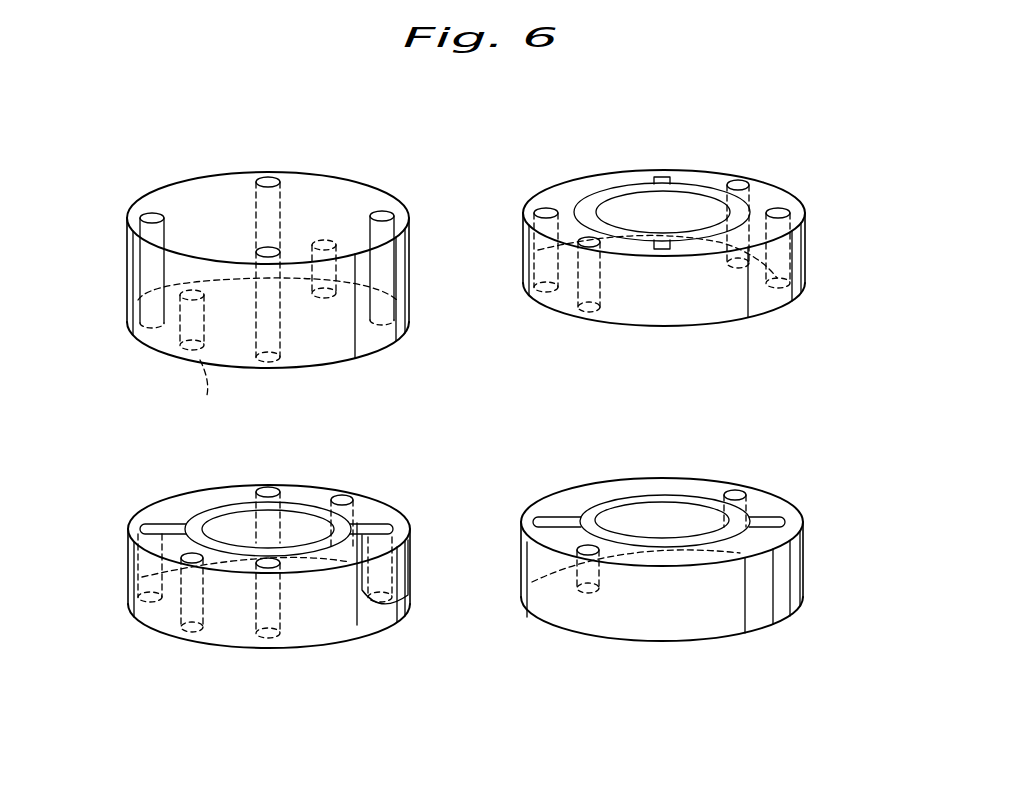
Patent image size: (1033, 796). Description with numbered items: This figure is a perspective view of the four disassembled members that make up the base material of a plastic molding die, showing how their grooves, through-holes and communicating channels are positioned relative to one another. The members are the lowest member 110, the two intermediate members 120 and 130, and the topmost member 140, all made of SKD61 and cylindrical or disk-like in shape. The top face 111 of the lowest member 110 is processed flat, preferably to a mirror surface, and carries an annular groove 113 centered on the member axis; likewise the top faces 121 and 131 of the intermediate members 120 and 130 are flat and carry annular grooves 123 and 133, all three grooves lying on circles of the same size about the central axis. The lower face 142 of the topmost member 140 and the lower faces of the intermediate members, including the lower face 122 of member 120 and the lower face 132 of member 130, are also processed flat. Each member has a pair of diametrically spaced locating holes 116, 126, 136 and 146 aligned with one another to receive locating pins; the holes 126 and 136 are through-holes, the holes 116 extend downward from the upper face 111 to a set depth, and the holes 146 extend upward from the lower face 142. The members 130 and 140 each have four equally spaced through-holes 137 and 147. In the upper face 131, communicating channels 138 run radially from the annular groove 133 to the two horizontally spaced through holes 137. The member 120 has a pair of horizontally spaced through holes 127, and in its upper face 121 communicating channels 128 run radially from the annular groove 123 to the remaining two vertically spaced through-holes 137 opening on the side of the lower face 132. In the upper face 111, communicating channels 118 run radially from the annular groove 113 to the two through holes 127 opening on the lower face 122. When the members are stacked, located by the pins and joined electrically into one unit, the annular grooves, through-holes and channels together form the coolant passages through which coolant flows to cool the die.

The lowest member 110 is at (698, 550).
The upper face 111 is at (620, 495).
The annular groove 113 is at (668, 498).
The locating holes 116 is at (740, 492).
The communicating channels 118 is at (555, 519).
The intermediate member 120 is at (693, 225).
The upper face 121 is at (700, 183).
The lower face 122 is at (705, 300).
The annular groove 123 is at (608, 188).
The locating holes 126 is at (738, 182).
The through holes 127 is at (781, 209).
The communicating channels 128 is at (662, 177).
The intermediate member 130 is at (289, 572).
The upper face 131 is at (220, 497).
The lower face 132 is at (318, 620).
The annular groove 133 is at (198, 508).
The locating holes 136 is at (345, 500).
The through-holes 137 is at (273, 491).
The communicating channels 138 is at (170, 526).
The topmost member 140 is at (267, 267).
The lower face 142 is at (345, 335).
The locating holes 146 is at (320, 293).
The through-holes 147 is at (262, 180).